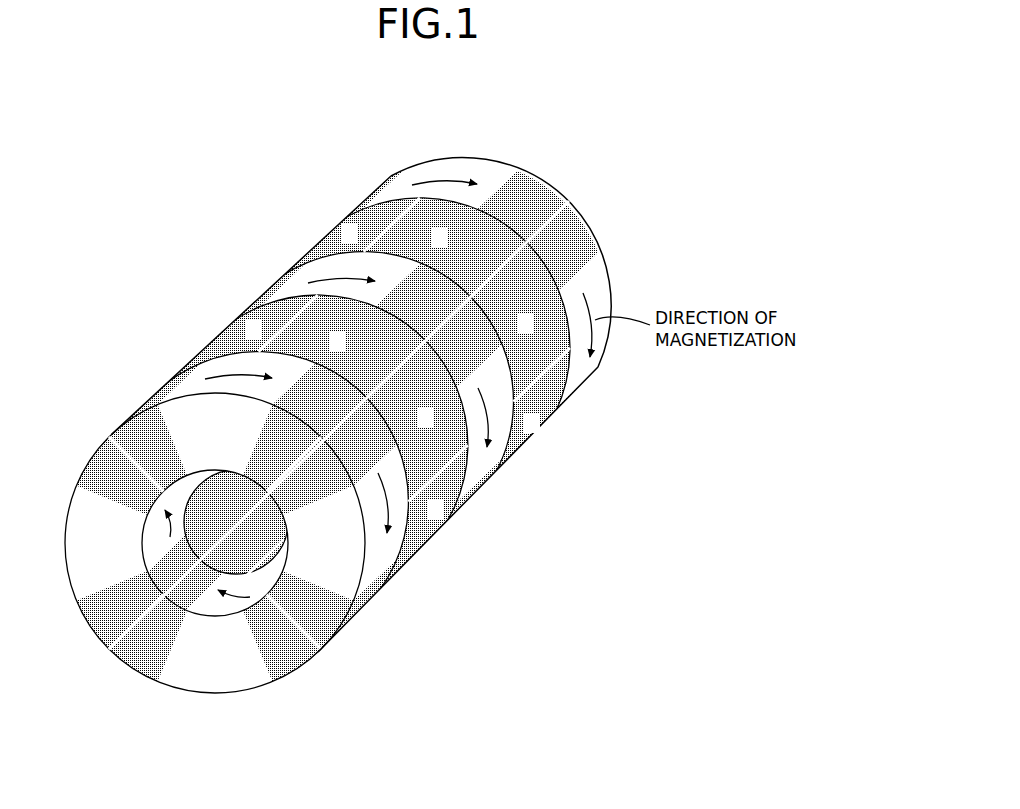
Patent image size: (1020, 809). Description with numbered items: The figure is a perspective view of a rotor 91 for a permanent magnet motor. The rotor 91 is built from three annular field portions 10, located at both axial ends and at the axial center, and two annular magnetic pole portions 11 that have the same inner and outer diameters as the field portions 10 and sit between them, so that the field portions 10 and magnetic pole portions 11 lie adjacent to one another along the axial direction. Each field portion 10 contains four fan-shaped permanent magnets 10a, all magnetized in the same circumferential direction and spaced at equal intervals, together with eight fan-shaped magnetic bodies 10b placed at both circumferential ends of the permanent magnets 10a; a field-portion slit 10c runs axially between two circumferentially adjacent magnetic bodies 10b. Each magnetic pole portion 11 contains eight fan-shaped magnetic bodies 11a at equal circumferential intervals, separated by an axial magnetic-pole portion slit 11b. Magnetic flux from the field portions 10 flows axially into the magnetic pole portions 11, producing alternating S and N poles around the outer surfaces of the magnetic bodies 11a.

The rotor 91 is at (405, 381).
The field portion 10 is at (154, 389).
The magnetic pole portion 11 is at (154, 389).
The permanent magnet 10a is at (445, 162).
The magnetic body 10b is at (532, 183).
The field-portion slit 10c is at (565, 198).
The magnetic body 11a is at (553, 430).
The magnetic-pole portion slit 11b is at (462, 506).